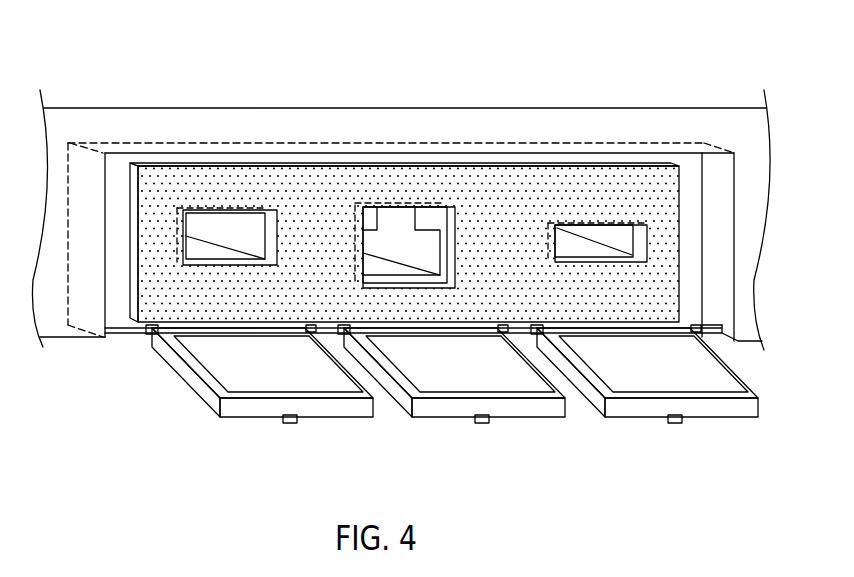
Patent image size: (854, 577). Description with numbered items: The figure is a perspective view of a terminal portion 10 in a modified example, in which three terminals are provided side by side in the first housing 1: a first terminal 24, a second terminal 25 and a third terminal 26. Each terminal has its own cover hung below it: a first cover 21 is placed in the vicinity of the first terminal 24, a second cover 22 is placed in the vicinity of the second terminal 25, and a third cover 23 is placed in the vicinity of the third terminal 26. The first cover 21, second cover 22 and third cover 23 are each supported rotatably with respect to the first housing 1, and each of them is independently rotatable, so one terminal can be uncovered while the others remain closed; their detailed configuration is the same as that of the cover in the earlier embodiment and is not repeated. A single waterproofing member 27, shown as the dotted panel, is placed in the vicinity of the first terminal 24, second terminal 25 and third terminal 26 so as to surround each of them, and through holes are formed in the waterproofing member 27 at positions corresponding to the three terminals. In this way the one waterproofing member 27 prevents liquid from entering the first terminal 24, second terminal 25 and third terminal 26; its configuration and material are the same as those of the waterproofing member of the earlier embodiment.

The first housing 1 is at (118, 108).
The terminal portion 10 is at (615, 77).
The first cover 21 is at (260, 418).
The second cover 22 is at (453, 418).
The third cover 23 is at (646, 418).
The first terminal 24 is at (210, 235).
The second terminal 25 is at (395, 235).
The third terminal 26 is at (572, 242).
The waterproofing member 27 is at (493, 190).